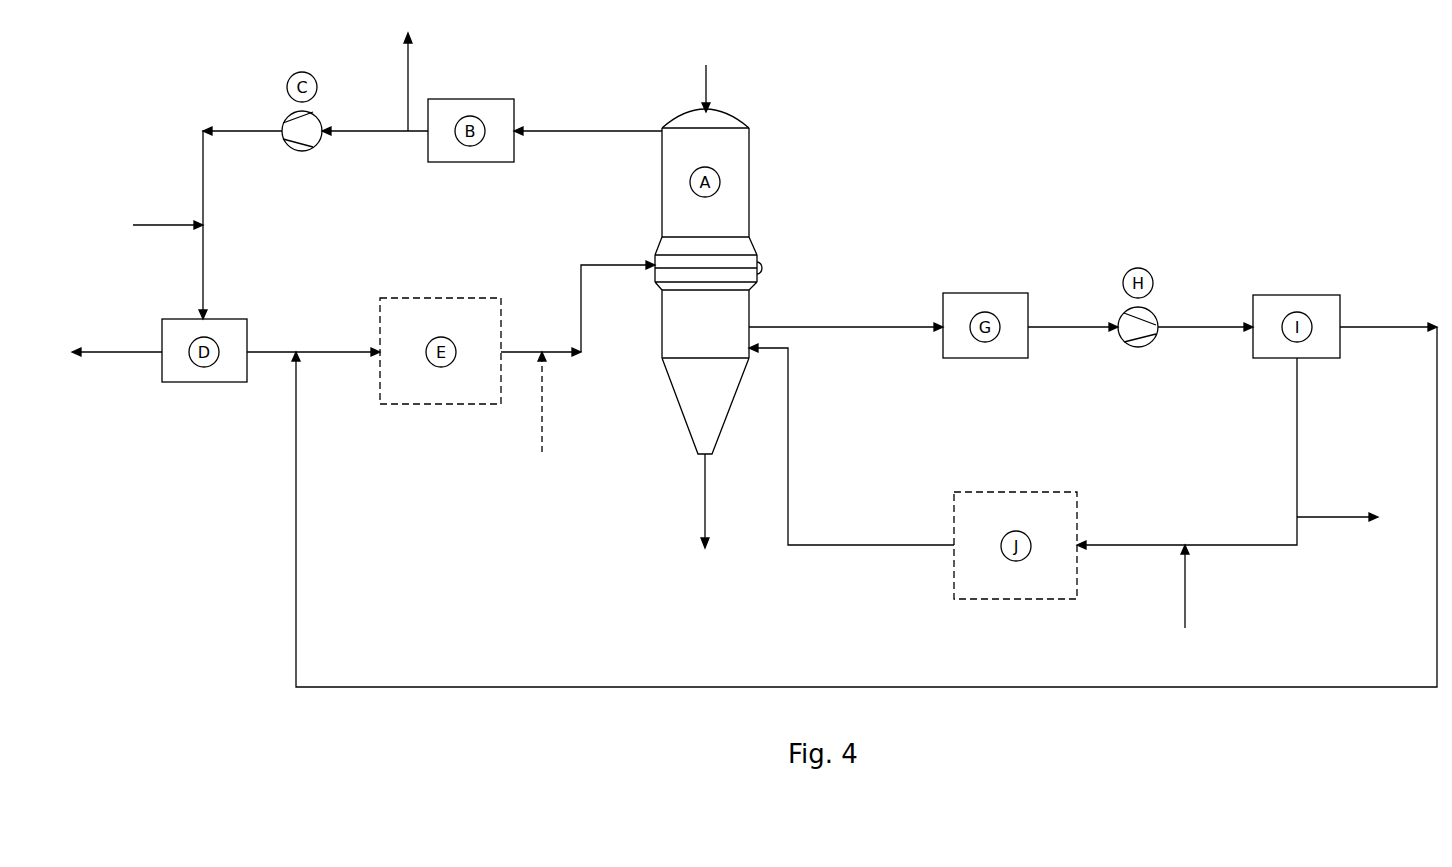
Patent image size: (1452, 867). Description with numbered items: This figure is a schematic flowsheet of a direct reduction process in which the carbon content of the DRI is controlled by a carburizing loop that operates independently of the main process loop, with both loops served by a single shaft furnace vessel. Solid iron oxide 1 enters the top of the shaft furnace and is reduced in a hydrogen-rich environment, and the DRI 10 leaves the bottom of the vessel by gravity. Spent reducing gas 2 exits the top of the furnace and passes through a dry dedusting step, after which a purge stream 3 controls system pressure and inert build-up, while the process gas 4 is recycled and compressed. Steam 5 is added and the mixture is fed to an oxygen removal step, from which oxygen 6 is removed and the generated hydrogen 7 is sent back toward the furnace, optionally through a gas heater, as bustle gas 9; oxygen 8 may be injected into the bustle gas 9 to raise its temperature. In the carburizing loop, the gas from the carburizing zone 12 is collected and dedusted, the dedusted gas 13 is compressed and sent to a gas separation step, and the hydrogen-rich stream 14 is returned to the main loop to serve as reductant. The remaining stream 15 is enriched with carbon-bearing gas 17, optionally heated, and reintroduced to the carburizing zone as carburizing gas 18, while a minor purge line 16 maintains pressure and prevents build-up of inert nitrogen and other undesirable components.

The solid iron oxide 1 is at (704, 85).
The spent reducing gas 2 is at (593, 133).
The purge stream 3 is at (408, 67).
The process gas 4 is at (374, 129).
The steam 5 is at (155, 224).
The removed oxygen 6 is at (120, 351).
The hydrogen 7 is at (331, 354).
The oxygen 8 is at (542, 412).
The bustle gas 9 is at (582, 312).
The DRI 10 is at (704, 495).
The gas from the carburizing vessel 12 is at (849, 325).
The dedusted gas 13 is at (1072, 324).
The hydrogen-rich stream 14 is at (868, 686).
The remaining stream 15 is at (1297, 444).
The purge line 16 is at (1333, 519).
The carbon-bearing gas 17 is at (1184, 600).
The carburizing gas 18 is at (789, 440).